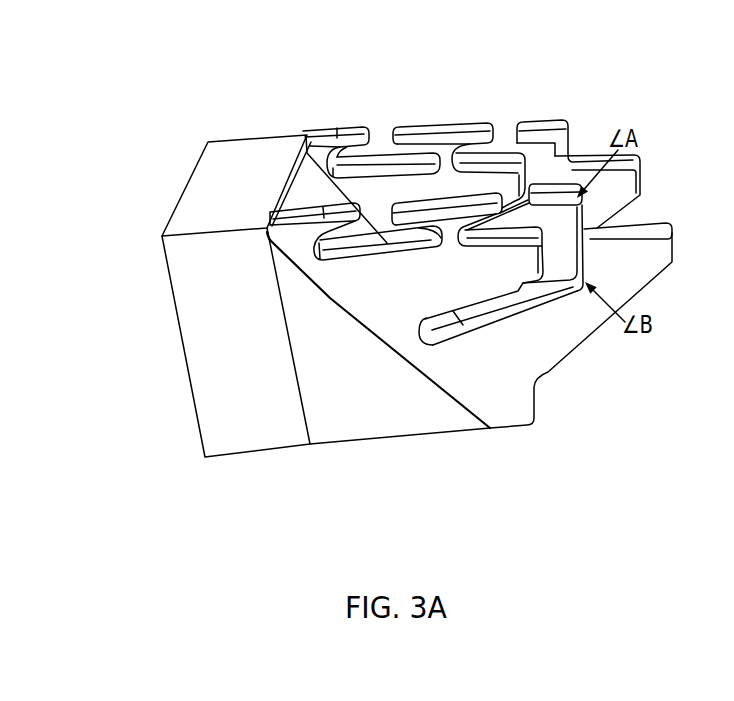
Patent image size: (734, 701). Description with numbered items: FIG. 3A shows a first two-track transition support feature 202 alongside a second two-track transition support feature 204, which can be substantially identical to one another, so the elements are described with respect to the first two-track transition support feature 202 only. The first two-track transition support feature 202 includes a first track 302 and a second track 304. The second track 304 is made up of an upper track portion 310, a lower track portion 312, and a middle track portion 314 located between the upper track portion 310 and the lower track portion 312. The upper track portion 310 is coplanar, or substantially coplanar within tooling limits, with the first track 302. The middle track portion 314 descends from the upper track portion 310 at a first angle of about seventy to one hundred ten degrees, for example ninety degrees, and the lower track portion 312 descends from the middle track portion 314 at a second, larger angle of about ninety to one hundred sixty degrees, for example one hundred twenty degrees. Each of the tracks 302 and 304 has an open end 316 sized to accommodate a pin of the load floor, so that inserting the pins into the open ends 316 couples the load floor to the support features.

The first two-track transition support feature 202 is at (242, 182).
The second two-track transition support feature 204 is at (287, 105).
The first track 302 is at (332, 268).
The second track 304 is at (409, 342).
The upper track portion 310 is at (462, 247).
The lower track portion 312 is at (583, 296).
The middle track portion 314 is at (571, 247).
The open end 316 is at (376, 201).